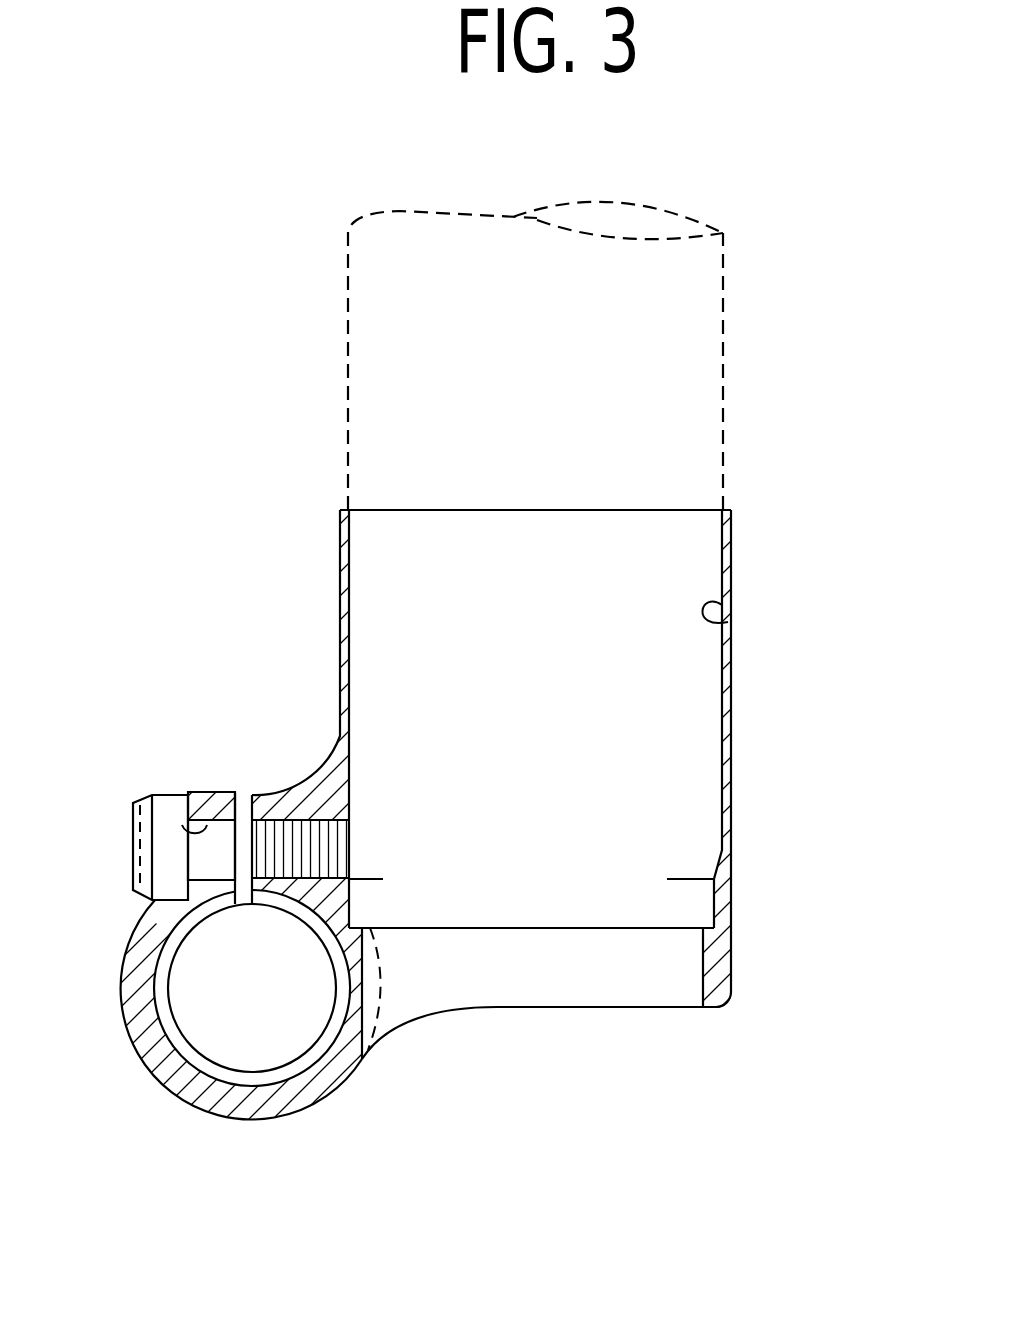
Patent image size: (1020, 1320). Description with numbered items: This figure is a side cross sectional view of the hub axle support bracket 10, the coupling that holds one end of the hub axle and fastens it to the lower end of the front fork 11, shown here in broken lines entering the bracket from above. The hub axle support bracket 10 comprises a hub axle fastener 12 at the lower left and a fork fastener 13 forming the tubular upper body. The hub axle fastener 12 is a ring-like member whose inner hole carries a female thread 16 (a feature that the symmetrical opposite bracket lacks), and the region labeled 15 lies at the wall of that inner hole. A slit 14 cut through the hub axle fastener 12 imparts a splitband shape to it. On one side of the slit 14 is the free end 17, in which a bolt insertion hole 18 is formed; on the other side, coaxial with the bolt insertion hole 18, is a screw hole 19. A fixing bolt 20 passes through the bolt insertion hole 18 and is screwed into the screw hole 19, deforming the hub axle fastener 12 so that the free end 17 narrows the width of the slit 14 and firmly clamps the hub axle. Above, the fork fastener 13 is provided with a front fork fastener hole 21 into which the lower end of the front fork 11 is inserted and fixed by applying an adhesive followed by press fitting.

The hub axle support bracket 10 is at (750, 778).
The front fork 11 is at (710, 427).
The hub axle fastener 12 is at (125, 1078).
The fork fastener 13 is at (662, 1045).
The slit 14 is at (243, 803).
The sleeve 15 is at (172, 990).
The female thread 16 is at (243, 1072).
The free end 17 is at (220, 797).
The bolt insertion hole 18 is at (182, 825).
The screw hole 19 is at (350, 830).
The fixing bolt 20 is at (160, 855).
The front fork fastener hole 21 is at (730, 623).